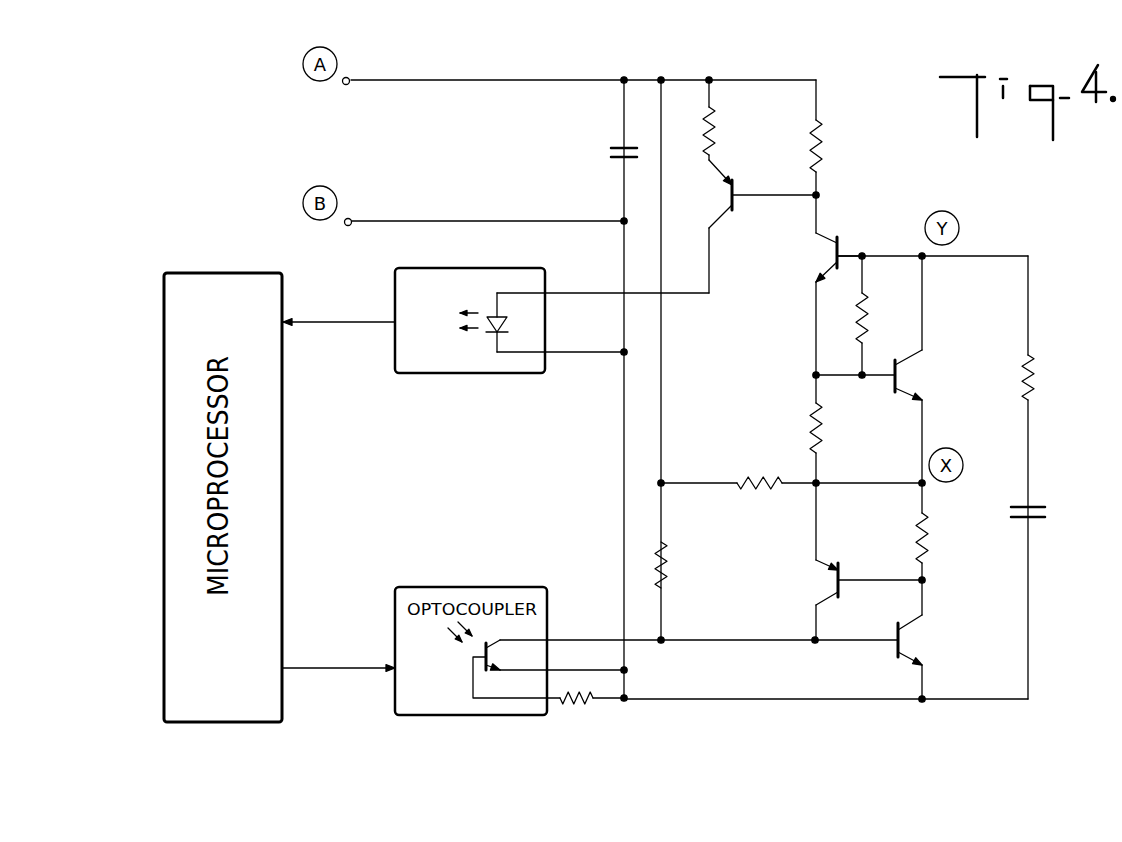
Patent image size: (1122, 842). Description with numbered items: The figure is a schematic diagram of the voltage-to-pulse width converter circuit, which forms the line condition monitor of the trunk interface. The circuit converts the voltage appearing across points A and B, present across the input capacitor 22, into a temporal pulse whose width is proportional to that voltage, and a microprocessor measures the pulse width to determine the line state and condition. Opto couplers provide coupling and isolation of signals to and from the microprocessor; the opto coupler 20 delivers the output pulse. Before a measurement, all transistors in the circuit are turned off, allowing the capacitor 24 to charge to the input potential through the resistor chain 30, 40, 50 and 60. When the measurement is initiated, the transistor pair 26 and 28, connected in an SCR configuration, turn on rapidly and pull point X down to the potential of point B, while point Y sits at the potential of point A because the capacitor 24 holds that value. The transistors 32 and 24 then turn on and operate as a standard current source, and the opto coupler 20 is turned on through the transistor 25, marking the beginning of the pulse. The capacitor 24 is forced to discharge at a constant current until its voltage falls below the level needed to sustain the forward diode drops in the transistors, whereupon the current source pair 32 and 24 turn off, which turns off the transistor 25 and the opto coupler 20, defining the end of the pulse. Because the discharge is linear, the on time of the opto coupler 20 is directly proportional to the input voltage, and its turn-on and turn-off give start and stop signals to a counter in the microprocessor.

The opto coupler 20 is at (505, 268).
The input capacitor 22 is at (600, 148).
The capacitor 24 is at (823, 253).
The transistor 25 is at (722, 195).
The transistor 26 is at (918, 643).
The transistor 28 is at (826, 582).
The resistor 30 is at (757, 470).
The transistor 32 is at (907, 376).
The resistor 40 is at (800, 412).
The resistor 50 is at (870, 312).
The resistor 60 is at (1040, 372).